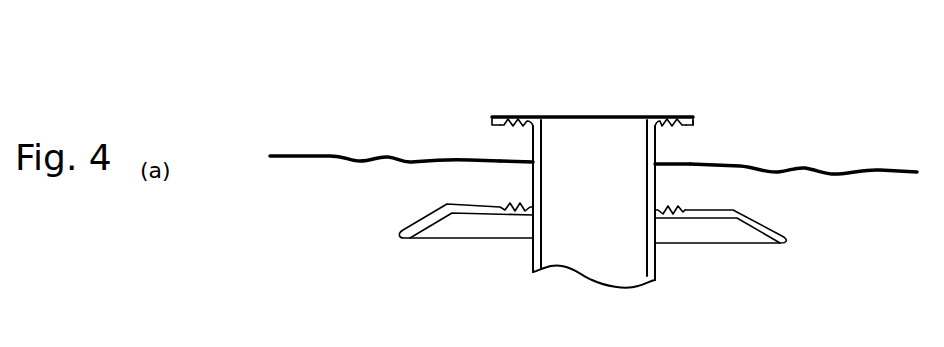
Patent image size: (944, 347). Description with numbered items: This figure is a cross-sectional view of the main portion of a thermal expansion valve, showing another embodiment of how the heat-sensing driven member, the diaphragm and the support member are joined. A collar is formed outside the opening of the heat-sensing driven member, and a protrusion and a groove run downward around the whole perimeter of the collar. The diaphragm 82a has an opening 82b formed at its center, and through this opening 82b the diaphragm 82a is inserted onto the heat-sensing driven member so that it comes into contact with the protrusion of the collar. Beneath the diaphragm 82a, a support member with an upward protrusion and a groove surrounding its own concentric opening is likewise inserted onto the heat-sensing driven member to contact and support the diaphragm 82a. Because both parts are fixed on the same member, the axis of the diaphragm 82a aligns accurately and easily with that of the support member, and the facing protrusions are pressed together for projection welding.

The diaphragm 82a is at (310, 155).
The opening 82b is at (530, 153).